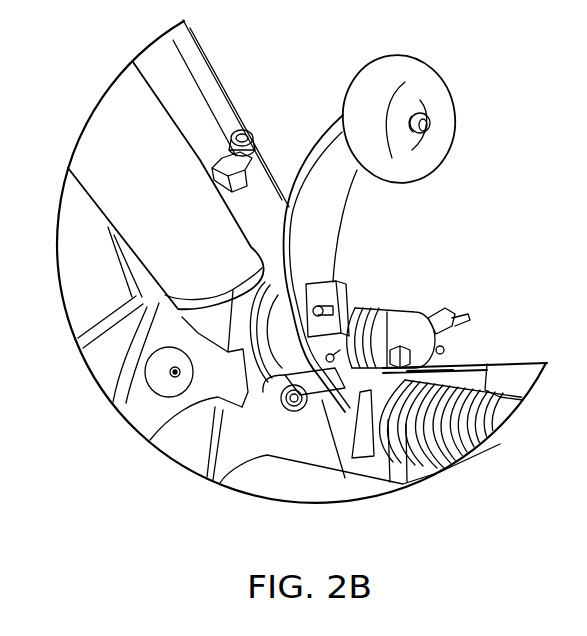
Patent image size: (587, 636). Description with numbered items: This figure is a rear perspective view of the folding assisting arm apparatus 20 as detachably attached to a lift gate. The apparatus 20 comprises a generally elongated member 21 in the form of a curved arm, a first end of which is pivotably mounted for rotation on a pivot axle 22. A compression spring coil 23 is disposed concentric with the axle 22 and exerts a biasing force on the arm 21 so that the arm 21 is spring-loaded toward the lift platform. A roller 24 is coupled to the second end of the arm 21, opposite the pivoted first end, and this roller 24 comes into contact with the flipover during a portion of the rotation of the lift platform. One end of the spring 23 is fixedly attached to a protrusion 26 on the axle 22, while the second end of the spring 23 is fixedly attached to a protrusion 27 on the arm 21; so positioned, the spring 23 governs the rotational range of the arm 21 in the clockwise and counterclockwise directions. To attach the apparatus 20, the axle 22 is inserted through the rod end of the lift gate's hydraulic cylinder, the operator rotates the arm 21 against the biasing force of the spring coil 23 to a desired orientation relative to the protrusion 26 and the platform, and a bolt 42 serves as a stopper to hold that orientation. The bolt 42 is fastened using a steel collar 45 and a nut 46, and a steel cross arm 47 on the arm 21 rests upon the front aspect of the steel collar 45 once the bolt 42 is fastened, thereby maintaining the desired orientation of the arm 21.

The folding assisting arm apparatus 20 is at (454, 44).
The elongated member 21 is at (330, 240).
The pivot axle 22 is at (443, 350).
The compression spring coil 23 is at (385, 322).
The roller 24 is at (422, 160).
The protrusion on the axle 26 is at (452, 320).
The protrusion on the arm 27 is at (352, 298).
The bolt 42 is at (303, 410).
The steel collar 45 is at (283, 410).
The nut 46 is at (300, 412).
The steel cross arm 47 is at (330, 403).